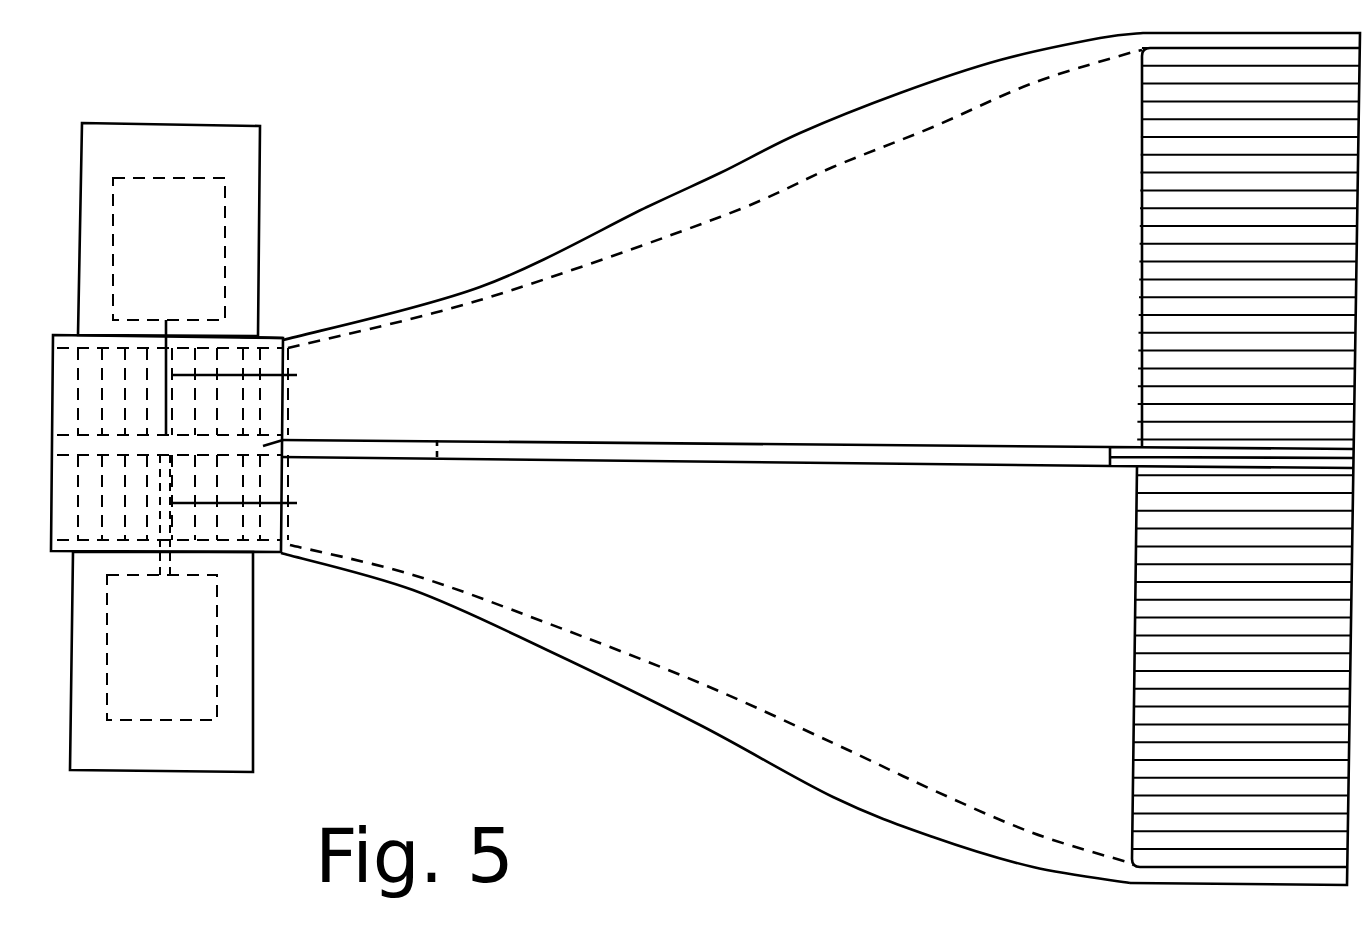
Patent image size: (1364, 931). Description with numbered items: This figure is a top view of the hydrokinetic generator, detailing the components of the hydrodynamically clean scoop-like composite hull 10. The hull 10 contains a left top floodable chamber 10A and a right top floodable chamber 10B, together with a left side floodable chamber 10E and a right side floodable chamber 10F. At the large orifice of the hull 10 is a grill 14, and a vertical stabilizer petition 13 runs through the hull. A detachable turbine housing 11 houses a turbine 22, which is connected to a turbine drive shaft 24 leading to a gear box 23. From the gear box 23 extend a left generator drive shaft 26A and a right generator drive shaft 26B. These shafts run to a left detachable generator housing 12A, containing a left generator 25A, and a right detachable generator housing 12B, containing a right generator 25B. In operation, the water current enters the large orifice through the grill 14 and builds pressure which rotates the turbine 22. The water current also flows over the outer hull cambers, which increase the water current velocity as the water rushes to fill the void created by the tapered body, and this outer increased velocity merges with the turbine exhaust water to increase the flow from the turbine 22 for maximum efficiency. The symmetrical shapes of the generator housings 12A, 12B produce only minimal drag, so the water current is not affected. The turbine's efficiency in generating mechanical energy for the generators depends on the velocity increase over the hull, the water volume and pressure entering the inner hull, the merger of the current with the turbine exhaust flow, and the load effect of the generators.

The scoop-like composite hull 10 is at (810, 133).
The left top floodable chamber 10A is at (995, 602).
The right top floodable chamber 10B is at (975, 302).
The left side floodable chamber 10E is at (917, 813).
The right side floodable chamber 10F is at (915, 141).
The detachable turbine housing 11 is at (273, 338).
The left detachable generator housing 12A is at (253, 735).
The right detachable generator housing 12B is at (262, 133).
The vertical stabilizer petition 13 is at (645, 441).
The grill 14 is at (1135, 761).
The turbine 22 is at (247, 533).
The gear box 23 is at (169, 447).
The turbine drive shaft 24 is at (283, 440).
The left generator 25A is at (197, 660).
The right generator 25B is at (205, 253).
The left generator drive shaft 26A is at (263, 503).
The right generator drive shaft 26B is at (263, 376).